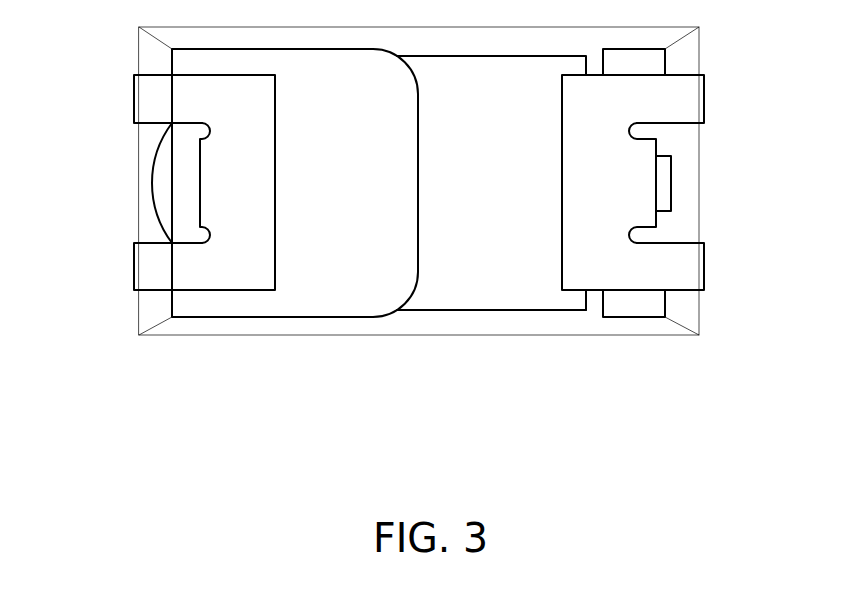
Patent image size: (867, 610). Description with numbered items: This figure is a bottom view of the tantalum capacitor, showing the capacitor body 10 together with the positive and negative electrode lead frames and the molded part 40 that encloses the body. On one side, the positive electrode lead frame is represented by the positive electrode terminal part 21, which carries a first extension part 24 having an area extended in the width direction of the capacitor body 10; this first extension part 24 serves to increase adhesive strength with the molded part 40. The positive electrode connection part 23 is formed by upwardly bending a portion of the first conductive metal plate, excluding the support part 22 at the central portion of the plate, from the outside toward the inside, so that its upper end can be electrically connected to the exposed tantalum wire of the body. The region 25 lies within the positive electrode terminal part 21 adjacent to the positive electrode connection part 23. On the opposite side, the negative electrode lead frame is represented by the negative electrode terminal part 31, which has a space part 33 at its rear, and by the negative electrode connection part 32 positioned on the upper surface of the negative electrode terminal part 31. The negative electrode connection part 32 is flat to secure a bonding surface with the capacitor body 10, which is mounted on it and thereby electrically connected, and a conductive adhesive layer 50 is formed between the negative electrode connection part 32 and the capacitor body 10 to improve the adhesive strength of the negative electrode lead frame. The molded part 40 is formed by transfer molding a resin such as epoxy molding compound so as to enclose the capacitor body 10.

The capacitor body 10 is at (462, 265).
The positive electrode terminal part 21 is at (576, 278).
The support part 22 is at (684, 282).
The positive electrode connection part 23 is at (663, 180).
The first extension part 24 is at (629, 302).
The receiving groove 25 is at (688, 200).
The negative electrode terminal part 31 is at (235, 265).
The negative electrode connection part 32 is at (340, 265).
The space part 33 is at (182, 190).
The molded part 40 is at (507, 338).
The conductive adhesive layer 50 is at (170, 170).